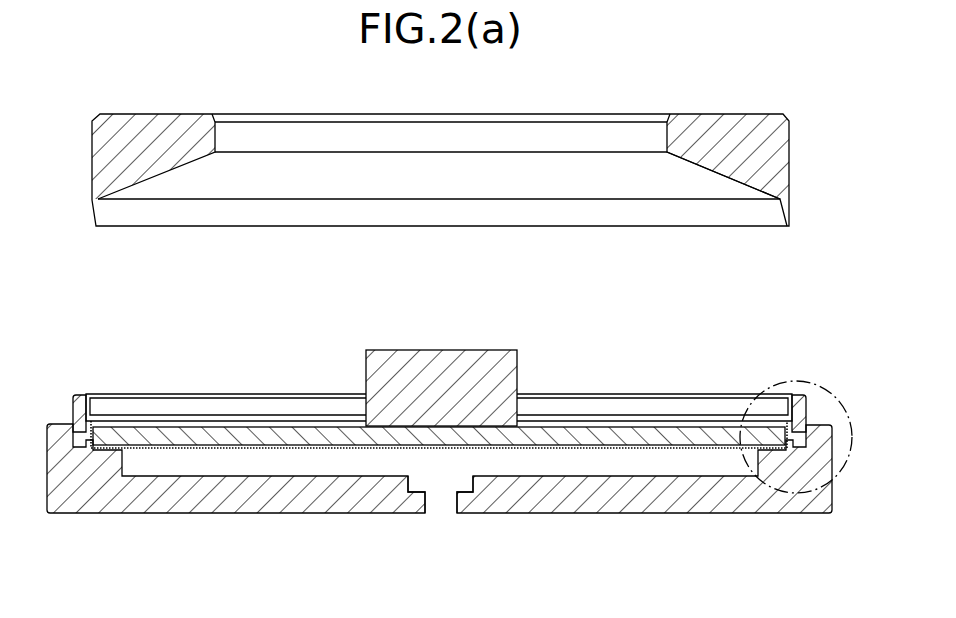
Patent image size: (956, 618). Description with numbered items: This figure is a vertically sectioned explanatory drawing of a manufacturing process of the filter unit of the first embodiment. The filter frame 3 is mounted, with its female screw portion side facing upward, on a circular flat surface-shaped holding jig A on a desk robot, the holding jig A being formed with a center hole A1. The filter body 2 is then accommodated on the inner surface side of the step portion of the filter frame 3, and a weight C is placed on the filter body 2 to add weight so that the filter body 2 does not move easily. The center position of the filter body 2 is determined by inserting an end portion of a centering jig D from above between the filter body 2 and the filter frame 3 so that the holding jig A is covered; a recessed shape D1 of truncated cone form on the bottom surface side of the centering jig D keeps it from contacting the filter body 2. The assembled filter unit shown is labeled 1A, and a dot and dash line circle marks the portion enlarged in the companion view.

The centering jig D is at (731, 123).
The recessed shape D1 is at (722, 174).
The frame member 1A is at (79, 392).
The filter body 2 is at (177, 432).
The filter frame 3 is at (73, 407).
The holding jig A is at (97, 518).
The center hole A1 is at (448, 506).
The weight C is at (488, 362).